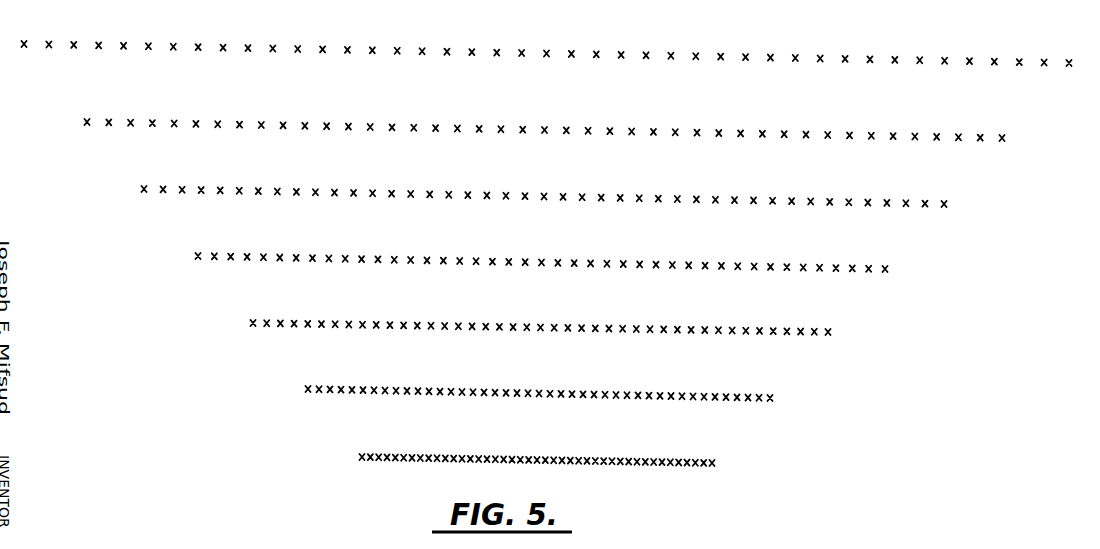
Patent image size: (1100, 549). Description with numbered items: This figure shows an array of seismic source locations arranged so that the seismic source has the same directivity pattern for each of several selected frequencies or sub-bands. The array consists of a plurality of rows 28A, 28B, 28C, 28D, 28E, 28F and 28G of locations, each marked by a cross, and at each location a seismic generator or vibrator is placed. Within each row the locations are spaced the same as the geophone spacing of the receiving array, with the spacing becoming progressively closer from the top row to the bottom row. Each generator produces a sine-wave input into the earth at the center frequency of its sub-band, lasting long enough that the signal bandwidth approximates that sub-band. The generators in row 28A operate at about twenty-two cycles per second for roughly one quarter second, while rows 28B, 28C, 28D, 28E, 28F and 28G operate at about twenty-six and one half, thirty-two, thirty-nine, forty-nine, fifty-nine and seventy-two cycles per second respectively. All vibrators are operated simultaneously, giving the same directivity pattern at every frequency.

The row of seismic generator locations 28A is at (547, 43).
The row of seismic generator locations 28B is at (545, 119).
The row of seismic generator locations 28C is at (544, 184).
The row of seismic generator locations 28D is at (542, 250).
The row of seismic generator locations 28E is at (541, 314).
The row of seismic generator locations 28F is at (539, 380).
The row of seismic generator locations 28G is at (537, 444).